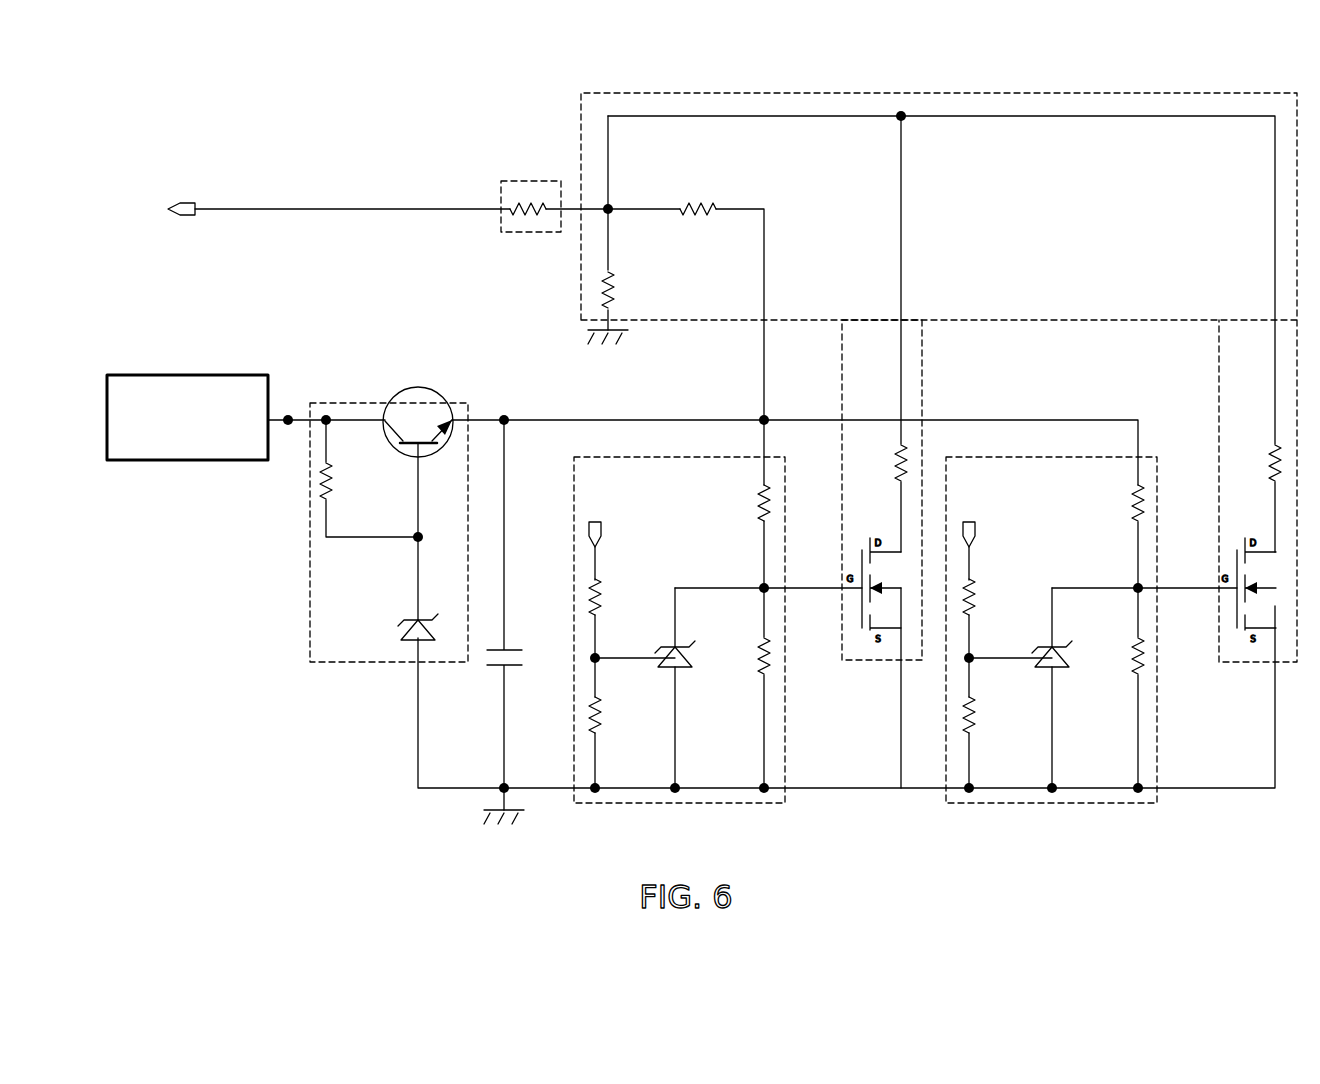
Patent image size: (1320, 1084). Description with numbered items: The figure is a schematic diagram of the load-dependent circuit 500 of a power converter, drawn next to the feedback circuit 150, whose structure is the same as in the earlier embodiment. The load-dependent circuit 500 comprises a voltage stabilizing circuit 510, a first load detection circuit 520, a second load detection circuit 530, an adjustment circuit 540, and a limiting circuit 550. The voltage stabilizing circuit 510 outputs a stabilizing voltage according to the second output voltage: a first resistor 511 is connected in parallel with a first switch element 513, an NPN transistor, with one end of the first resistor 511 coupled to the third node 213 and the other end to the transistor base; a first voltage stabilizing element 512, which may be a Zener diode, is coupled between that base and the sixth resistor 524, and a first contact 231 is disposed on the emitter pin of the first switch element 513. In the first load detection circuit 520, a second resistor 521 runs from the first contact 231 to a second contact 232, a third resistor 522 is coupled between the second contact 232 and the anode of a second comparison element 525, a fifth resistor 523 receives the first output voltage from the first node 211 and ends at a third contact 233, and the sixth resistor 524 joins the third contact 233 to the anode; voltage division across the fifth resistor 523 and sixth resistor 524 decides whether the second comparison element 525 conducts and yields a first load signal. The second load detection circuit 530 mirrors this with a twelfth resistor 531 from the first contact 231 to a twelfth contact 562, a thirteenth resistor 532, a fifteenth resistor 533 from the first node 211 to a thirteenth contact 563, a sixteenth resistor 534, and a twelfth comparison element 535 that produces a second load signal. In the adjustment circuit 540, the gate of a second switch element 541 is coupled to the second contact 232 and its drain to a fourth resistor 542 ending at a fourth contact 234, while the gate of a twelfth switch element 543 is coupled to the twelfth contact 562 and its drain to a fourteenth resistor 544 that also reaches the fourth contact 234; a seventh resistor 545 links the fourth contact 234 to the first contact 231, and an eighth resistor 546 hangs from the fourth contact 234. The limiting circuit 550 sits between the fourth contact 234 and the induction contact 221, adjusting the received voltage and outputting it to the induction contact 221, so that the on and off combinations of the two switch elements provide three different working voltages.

The feedback circuit 150 is at (172, 428).
The first node 211 is at (600, 522).
The third node 213 is at (290, 412).
The induction contact 221 is at (182, 216).
The first contact 231 is at (758, 414).
The second contact 232 is at (758, 585).
The third contact 233 is at (598, 655).
The fourth contact 234 is at (613, 206).
The load-dependent circuit 500 is at (297, 768).
The voltage stabilizing circuit 510 is at (310, 612).
The first resistor 511 is at (318, 482).
The first voltage stabilizing element 512 is at (410, 641).
The first switch element 513 is at (393, 391).
The first load detection circuit 520 is at (785, 803).
The second resistor 521 is at (758, 505).
The third resistor 522 is at (758, 645).
The fifth resistor 523 is at (600, 585).
The sixth resistor 524 is at (600, 728).
The second comparison element 525 is at (690, 672).
The second load detection circuit 530 is at (1157, 803).
The twelfth resistor 531 is at (1132, 505).
The thirteenth resistor 532 is at (1132, 645).
The fifteenth resistor 533 is at (974, 585).
The sixteenth resistor 534 is at (974, 728).
The twelfth comparison element 535 is at (1066, 672).
The adjustment circuit 540 is at (580, 142).
The second switch element 541 is at (870, 642).
The fourth resistor 542 is at (897, 460).
The twelfth switch element 543 is at (1245, 642).
The fourteenth resistor 544 is at (1270, 460).
The seventh resistor 545 is at (716, 205).
The eighth resistor 546 is at (614, 290).
The limiting circuit 550 is at (528, 233).
The twelfth contact 562 is at (1132, 585).
The thirteenth contact 563 is at (972, 655).